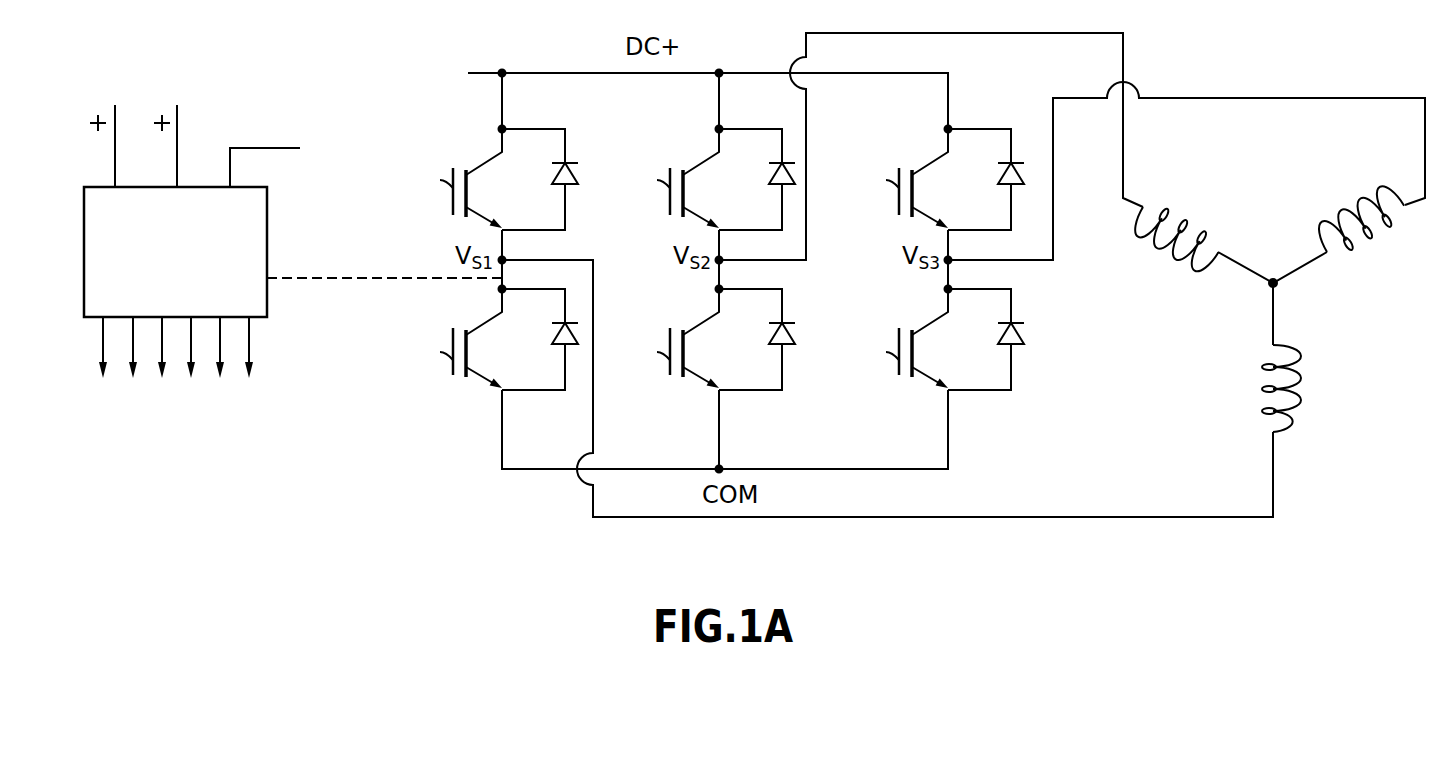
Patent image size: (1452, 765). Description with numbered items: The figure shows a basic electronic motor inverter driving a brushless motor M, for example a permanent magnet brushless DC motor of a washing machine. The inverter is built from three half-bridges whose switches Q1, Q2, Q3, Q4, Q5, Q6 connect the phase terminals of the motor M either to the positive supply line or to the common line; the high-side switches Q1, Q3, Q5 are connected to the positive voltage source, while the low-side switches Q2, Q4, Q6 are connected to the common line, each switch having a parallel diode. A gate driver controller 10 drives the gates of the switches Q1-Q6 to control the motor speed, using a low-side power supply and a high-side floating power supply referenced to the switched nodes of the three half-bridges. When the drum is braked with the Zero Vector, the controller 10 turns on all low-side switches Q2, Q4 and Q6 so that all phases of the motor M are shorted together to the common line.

The gate driver controller 10 is at (192, 187).
The high-side switch Q1 is at (500, 178).
The low-side switch Q2 is at (499, 338).
The high-side switch Q3 is at (716, 178).
The low-side switch Q4 is at (716, 338).
The high-side switch Q5 is at (948, 178).
The low-side switch Q6 is at (945, 338).
The motor M is at (1269, 306).